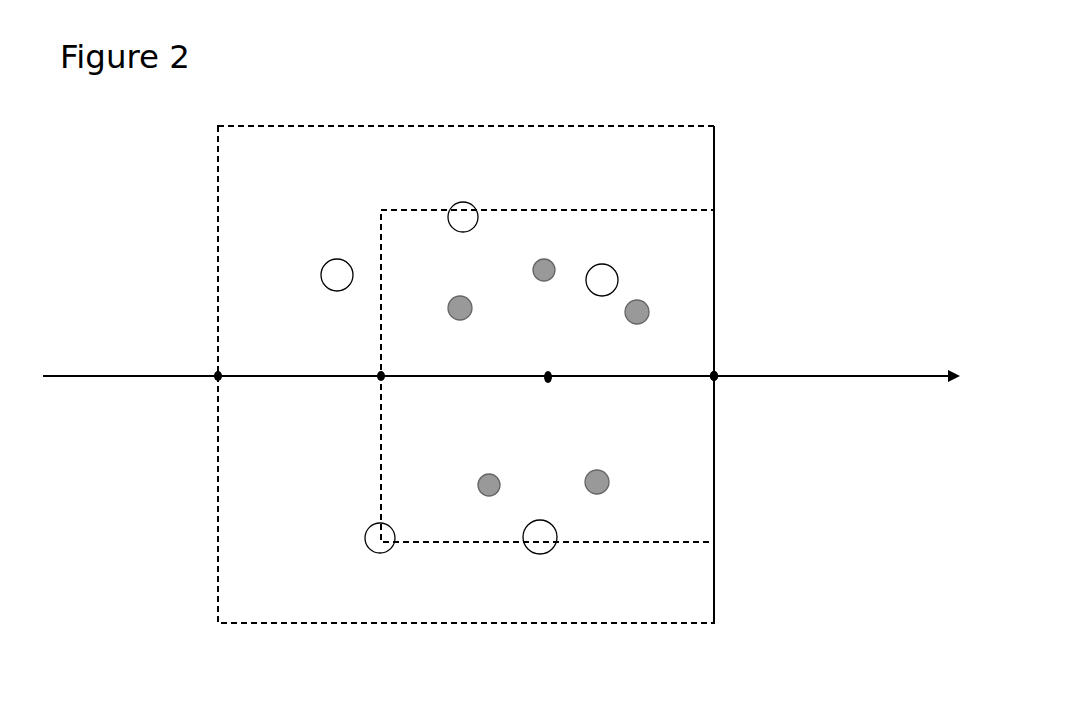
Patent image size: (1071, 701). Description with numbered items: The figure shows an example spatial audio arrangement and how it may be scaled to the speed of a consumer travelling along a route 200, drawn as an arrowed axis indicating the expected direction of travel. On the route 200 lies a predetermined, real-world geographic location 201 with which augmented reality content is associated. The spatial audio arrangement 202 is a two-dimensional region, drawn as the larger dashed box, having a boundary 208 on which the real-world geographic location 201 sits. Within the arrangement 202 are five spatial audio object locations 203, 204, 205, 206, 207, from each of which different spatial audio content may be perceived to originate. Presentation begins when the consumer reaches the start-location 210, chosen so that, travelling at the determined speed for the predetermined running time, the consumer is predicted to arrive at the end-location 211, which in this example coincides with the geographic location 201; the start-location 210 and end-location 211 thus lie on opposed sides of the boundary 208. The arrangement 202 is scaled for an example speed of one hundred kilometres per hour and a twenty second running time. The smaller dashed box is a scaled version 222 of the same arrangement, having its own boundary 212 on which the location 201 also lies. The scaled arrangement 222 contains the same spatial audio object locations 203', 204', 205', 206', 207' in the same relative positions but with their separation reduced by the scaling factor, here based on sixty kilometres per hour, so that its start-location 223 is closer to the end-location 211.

The route 200 is at (84, 377).
The predetermined, real-world geographic location 201 is at (717, 373).
The spatial audio arrangement 202 is at (496, 118).
The spatial audio object location 203 is at (250, 244).
The spatial audio object location 204 is at (406, 151).
The spatial audio object location 205 is at (688, 261).
The spatial audio object location 206 is at (554, 588).
The spatial audio object location 207 is at (404, 589).
The scaled spatial audio object location 203' is at (428, 273).
The scaled spatial audio object location 204' is at (544, 246).
The scaled spatial audio object location 205' is at (612, 331).
The scaled spatial audio object location 206' is at (636, 493).
The scaled spatial audio object location 207' is at (452, 481).
The boundary 208 is at (716, 180).
The start-location 210 is at (217, 379).
The end-location 211 is at (717, 379).
The boundary 212 is at (580, 208).
The scaled spatial audio arrangement 222 is at (652, 200).
The start-location 223 is at (379, 379).